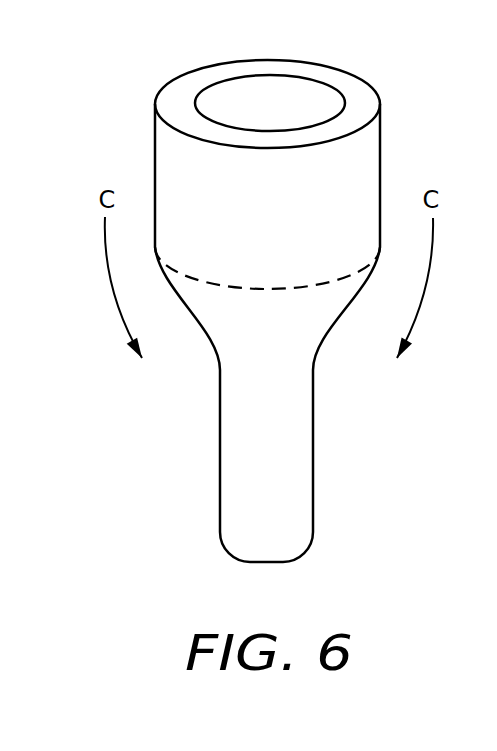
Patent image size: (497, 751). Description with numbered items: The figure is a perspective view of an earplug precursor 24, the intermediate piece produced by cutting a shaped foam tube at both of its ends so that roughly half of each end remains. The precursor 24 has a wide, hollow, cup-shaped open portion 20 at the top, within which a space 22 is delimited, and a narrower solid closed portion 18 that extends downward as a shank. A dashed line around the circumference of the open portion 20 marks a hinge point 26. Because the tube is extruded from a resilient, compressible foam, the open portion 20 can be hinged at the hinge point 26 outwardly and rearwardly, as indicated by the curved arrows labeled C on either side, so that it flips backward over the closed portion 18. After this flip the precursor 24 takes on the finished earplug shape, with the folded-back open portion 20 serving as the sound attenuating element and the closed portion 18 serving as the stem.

The earplug precursor 24 is at (119, 55).
The open portion 20 is at (362, 100).
The space 22 is at (277, 90).
The hinge point 26 is at (253, 290).
The closed portion 18 is at (292, 482).